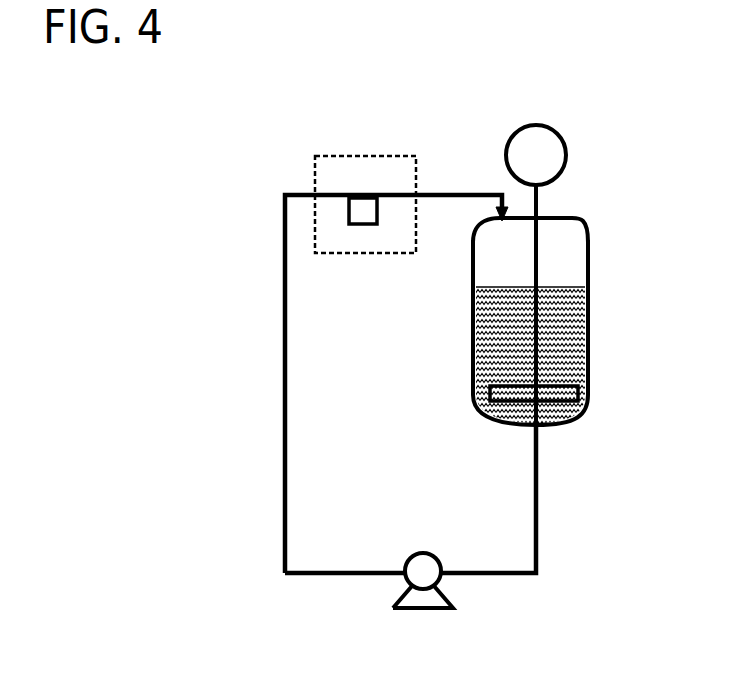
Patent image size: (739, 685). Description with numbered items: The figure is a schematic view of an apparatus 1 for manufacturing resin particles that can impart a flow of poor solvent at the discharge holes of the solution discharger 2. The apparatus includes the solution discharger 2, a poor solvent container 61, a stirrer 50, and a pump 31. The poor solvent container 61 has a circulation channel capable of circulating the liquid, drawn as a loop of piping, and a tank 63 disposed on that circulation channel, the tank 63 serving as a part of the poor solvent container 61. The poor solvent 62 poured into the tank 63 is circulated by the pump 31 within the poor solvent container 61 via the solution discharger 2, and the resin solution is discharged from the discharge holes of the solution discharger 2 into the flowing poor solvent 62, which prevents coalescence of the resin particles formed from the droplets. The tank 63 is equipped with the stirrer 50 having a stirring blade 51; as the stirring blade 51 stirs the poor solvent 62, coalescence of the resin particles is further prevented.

The liquid treatment apparatus 1 is at (262, 120).
The solution discharger 2 is at (378, 221).
The pump 31 is at (420, 553).
The stirrer 50 is at (553, 126).
The stirring blade 51 is at (518, 395).
The poor solvent container 61 is at (283, 361).
The poor solvent 62 is at (563, 420).
The tank 63 is at (592, 256).